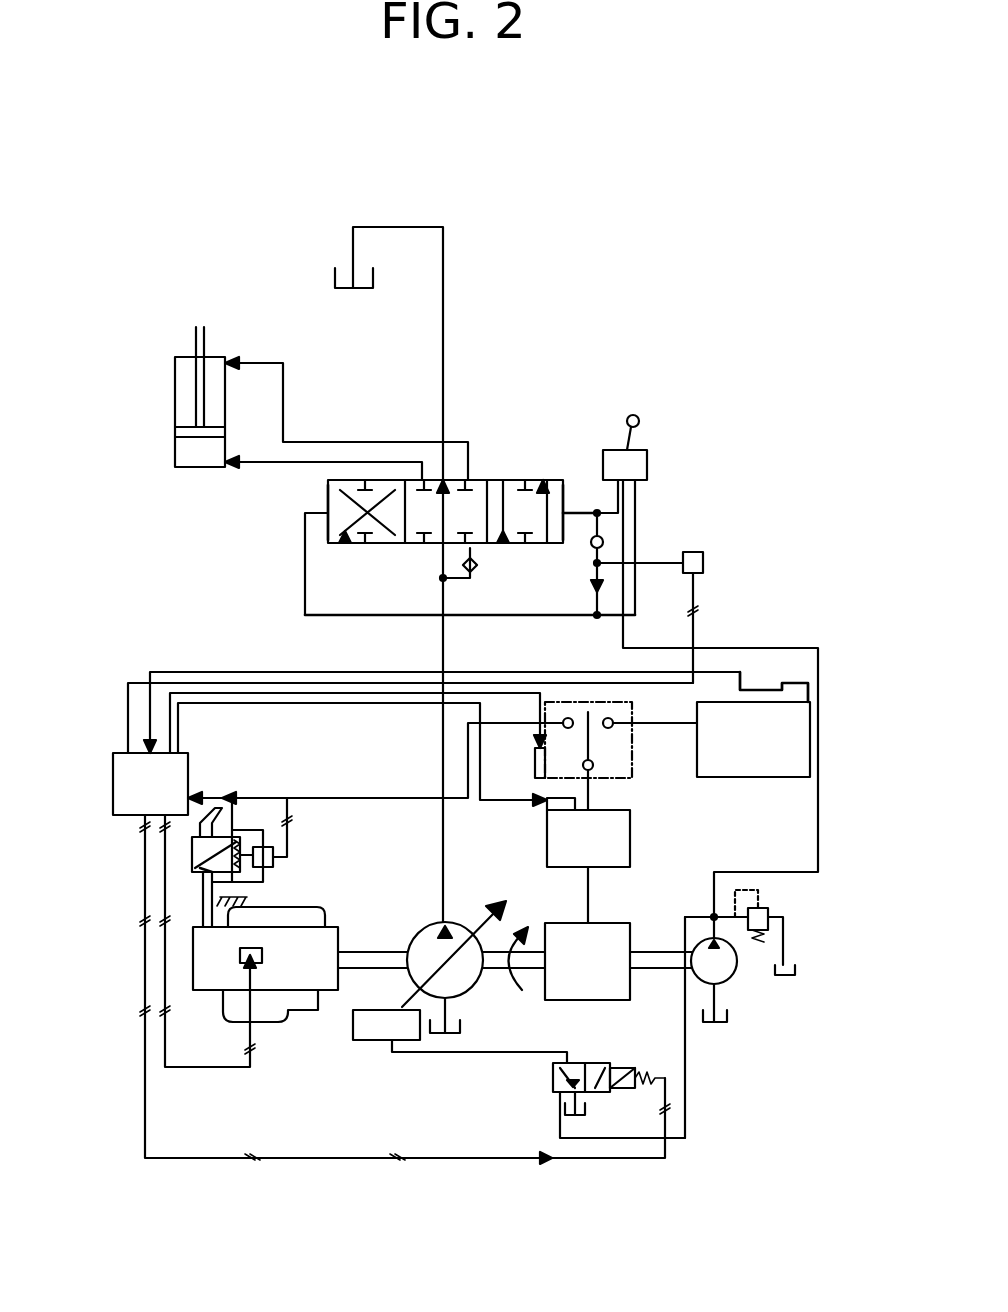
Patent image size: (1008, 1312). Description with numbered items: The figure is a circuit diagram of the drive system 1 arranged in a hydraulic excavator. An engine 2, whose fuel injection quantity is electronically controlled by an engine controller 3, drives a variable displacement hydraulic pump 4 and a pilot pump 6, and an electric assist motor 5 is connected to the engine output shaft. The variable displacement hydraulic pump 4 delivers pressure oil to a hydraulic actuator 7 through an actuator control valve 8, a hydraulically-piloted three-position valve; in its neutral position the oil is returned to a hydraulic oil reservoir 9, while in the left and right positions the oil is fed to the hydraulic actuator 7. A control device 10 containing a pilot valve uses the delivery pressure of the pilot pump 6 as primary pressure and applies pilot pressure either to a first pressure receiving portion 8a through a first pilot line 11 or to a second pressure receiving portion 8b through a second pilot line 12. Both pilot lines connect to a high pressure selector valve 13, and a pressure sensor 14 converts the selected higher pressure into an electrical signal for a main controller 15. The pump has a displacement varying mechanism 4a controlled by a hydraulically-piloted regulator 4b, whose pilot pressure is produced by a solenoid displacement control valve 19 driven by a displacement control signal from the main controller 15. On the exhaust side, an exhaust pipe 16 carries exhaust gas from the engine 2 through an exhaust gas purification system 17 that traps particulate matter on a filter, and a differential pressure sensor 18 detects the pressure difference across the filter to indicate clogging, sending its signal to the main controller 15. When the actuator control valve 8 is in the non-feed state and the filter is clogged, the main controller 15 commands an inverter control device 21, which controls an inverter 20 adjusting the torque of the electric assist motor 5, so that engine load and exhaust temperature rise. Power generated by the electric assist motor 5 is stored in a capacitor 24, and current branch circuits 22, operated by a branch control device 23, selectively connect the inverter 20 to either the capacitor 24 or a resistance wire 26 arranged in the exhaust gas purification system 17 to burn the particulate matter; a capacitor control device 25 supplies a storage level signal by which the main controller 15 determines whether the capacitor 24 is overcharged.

The drive system 1 is at (186, 182).
The engine 2 is at (313, 1022).
The engine controller 3 is at (267, 968).
The variable displacement hydraulic pump 4 is at (430, 925).
The displacement varying mechanism 4a is at (497, 900).
The hydraulically-piloted regulator 4b is at (370, 1042).
The electric assist motor 5 is at (614, 1003).
The pilot pump 6 is at (696, 944).
The hydraulic actuator 7 is at (175, 388).
The actuator control valve 8 is at (500, 480).
The first pressure receiving portion 8a is at (328, 500).
The second pressure receiving portion 8b is at (561, 546).
The hydraulic oil reservoir 9 is at (333, 275).
The control device 10 is at (647, 455).
The first pilot line 11 is at (568, 616).
The second pilot line 12 is at (583, 510).
The high pressure selector valve 13 is at (602, 540).
The pressure sensor 14 is at (703, 556).
The main controller 15 is at (113, 753).
The exhaust pipe 16 is at (203, 905).
The exhaust gas purification system 17 is at (192, 862).
The differential pressure sensor 18 is at (273, 862).
The displacement control valve 19 is at (606, 1095).
The inverter 20 is at (632, 836).
The inverter control device 21 is at (547, 806).
The current branch circuits 22 is at (632, 776).
The branch control device 23 is at (535, 775).
The capacitor 24 is at (808, 780).
The capacitor control device 25 is at (810, 685).
The resistance wire 26 is at (200, 868).